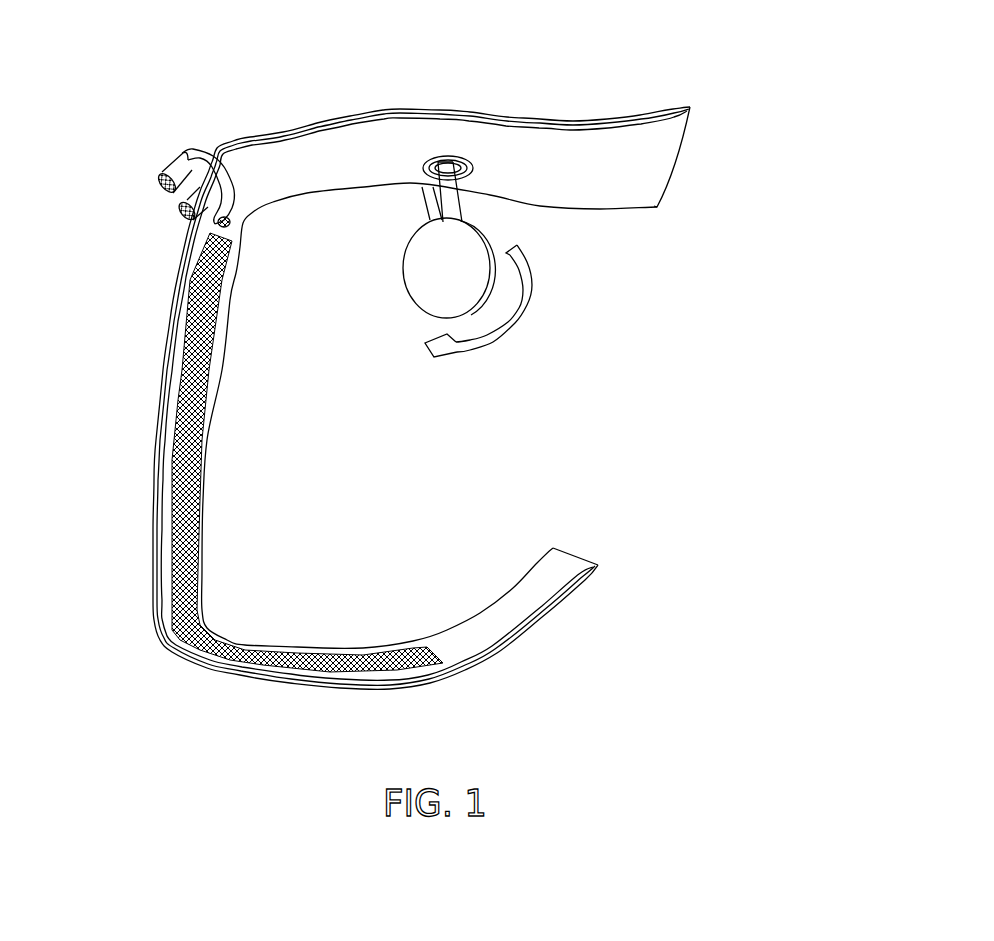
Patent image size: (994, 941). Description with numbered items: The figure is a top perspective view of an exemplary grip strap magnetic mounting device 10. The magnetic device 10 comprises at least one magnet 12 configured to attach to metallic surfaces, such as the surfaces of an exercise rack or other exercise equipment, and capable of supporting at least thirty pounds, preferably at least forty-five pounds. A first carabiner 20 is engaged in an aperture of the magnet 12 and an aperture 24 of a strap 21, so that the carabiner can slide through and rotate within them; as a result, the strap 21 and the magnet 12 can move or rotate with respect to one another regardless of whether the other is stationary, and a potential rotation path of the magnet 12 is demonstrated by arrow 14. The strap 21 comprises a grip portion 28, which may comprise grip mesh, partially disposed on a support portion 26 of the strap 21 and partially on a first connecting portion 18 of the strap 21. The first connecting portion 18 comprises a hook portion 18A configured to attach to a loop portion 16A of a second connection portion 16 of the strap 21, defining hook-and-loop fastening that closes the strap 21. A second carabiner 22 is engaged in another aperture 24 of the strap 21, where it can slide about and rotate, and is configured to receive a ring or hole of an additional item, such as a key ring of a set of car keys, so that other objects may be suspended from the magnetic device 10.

The grip strap magnetic mounting device 10 is at (176, 91).
The magnet 12 is at (426, 273).
The arrow 14 is at (530, 283).
The second connection portion 16 is at (320, 118).
The loop portion 16A is at (690, 158).
The first connecting portion 18 is at (280, 676).
The hook portion 18A is at (530, 562).
The first carabiner 20 is at (453, 190).
The strap 21 is at (150, 413).
The second carabiner 22 is at (170, 204).
The aperture 24 is at (225, 222).
The support portion 26 is at (146, 507).
The grip portion 28 is at (206, 450).